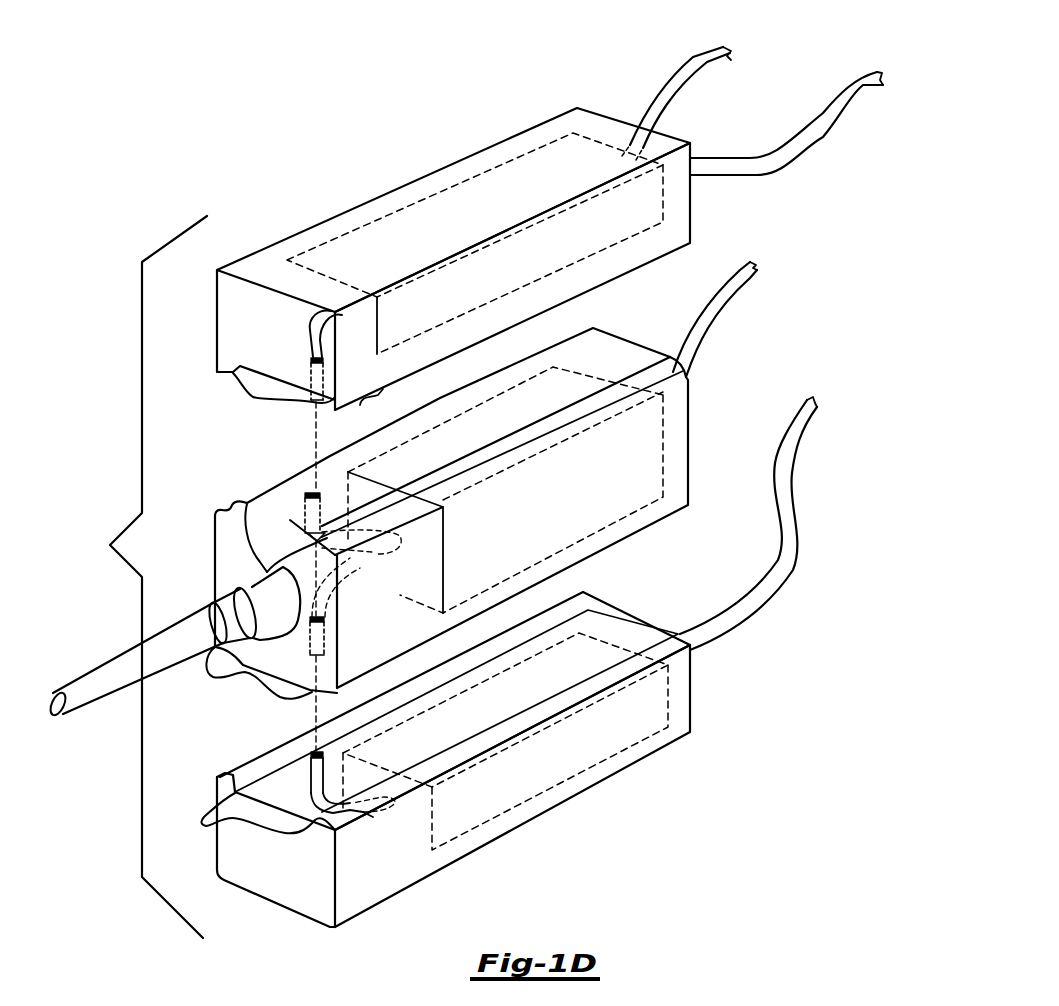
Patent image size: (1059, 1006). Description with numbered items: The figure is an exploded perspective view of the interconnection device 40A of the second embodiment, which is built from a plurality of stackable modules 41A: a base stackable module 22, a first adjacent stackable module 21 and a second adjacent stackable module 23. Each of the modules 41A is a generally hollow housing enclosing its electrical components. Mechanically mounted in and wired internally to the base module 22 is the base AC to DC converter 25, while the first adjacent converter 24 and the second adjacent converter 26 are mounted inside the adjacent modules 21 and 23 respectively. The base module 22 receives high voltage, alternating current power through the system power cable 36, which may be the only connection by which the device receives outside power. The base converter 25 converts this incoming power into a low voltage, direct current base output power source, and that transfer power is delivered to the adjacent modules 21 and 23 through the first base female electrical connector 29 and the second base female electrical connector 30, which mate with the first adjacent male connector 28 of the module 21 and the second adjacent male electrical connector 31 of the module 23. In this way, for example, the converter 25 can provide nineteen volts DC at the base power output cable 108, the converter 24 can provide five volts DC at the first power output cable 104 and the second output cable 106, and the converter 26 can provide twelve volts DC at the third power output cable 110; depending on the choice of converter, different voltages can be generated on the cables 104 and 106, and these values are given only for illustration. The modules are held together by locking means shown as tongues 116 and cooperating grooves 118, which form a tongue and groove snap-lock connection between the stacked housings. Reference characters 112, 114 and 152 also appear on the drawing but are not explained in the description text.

The interconnection device 40A is at (220, 162).
The stackable modules 41A is at (205, 336).
The first adjacent stackable module 21 is at (482, 270).
The base stackable module 22 is at (462, 539).
The second adjacent stackable module 23 is at (454, 759).
The first adjacent DC to DC converter 24 is at (450, 212).
The base AC to DC converter 25 is at (538, 400).
The second adjacent DC to DC converter 26 is at (496, 805).
The first adjacent male connector 28 is at (310, 372).
The first base female electrical connector 29 is at (316, 488).
The second base female electrical connector 30 is at (326, 635).
The second adjacent male electrical connector 31 is at (310, 768).
The system power cable 36 is at (83, 683).
The first power output cable 104 is at (667, 75).
The second output cable 106 is at (828, 112).
The base power output cable 108 is at (714, 312).
The third power output cable 110 is at (787, 572).
The clip 112 is at (284, 399).
The clip 114 is at (286, 572).
The tongues 116 is at (253, 675).
The grooves 118 is at (258, 823).
The tab 152 is at (365, 411).